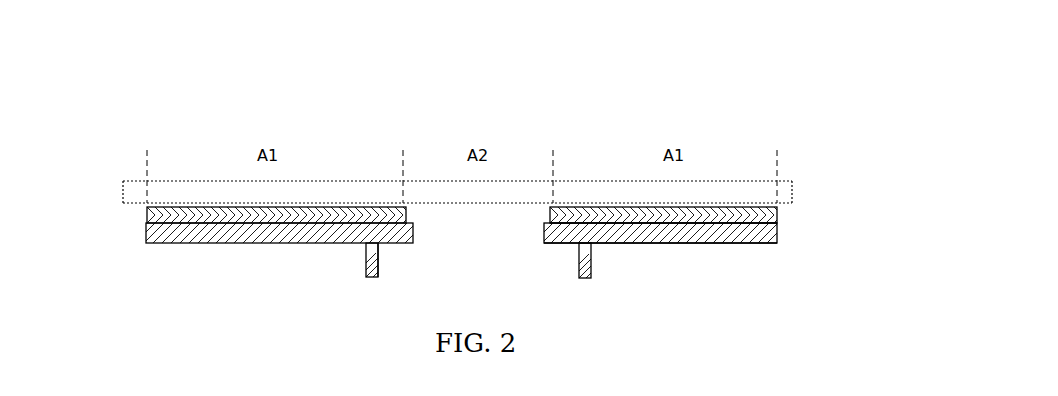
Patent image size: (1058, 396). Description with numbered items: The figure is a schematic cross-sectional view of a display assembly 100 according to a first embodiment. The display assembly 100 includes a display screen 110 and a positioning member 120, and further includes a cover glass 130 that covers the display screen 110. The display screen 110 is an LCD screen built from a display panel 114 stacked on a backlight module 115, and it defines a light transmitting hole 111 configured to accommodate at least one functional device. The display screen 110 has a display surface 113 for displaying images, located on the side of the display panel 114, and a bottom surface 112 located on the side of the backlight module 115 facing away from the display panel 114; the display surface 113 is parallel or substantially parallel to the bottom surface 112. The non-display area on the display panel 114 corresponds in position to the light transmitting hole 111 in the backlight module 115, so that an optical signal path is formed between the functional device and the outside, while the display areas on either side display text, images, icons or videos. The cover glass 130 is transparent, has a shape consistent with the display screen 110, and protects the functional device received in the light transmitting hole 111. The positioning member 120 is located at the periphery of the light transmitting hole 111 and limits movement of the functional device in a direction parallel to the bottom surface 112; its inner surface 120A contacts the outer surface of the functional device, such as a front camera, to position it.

The display assembly 100 is at (422, 83).
The display screen 110 is at (513, 215).
The light transmitting hole 111 is at (467, 226).
The bottom surface 112 is at (718, 253).
The display surface 113 is at (626, 222).
The display panel 114 is at (779, 221).
The backlight module 115 is at (779, 239).
The positioning member 120 is at (366, 254).
The inner surface 120A is at (385, 262).
The cover glass 130 is at (130, 197).